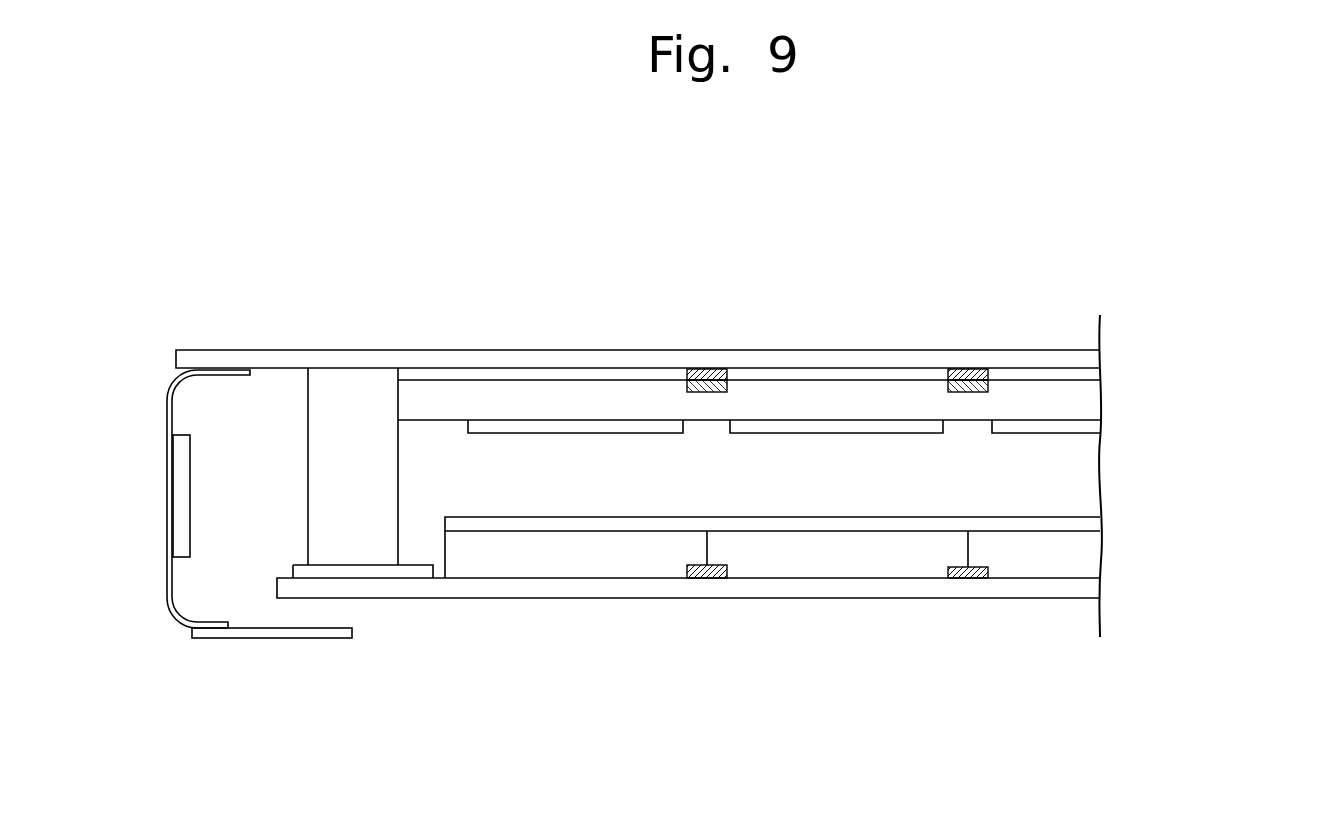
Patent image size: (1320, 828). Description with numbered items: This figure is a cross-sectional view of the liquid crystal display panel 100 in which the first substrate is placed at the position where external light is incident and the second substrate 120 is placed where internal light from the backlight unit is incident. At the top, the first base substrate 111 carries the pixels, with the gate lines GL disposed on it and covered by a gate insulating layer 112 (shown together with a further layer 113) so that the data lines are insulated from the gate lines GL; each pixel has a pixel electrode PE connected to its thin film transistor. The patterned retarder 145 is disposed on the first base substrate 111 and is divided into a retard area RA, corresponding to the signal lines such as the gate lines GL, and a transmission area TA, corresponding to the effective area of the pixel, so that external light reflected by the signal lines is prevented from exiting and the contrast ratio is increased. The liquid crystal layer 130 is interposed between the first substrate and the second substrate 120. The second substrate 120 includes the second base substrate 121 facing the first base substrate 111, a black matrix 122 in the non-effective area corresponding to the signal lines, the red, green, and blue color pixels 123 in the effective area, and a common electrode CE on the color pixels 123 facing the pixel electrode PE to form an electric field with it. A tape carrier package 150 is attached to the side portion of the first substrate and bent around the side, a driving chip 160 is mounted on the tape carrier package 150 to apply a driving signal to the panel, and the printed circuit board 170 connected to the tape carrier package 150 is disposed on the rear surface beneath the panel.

The liquid crystal display panel 100 is at (997, 295).
The first base substrate 111 is at (1088, 360).
The gate insulating layer 112 is at (815, 400).
The adhesive layer 113 is at (1088, 403).
The patterned retarder 145 is at (830, 282).
The retard area RA is at (708, 368).
The transmission area TA is at (798, 372).
The gate line GL is at (697, 393).
The pixel electrode PE is at (1088, 427).
The liquid crystal layer 130 is at (1067, 472).
The common electrode CE is at (1090, 523).
The color pixels 123 is at (1085, 550).
The second base substrate 121 is at (1092, 588).
The black matrix 122 is at (968, 578).
The second substrate 120 is at (1188, 517).
The tape carrier package 150 is at (222, 377).
The driving chip 160 is at (180, 493).
The printed circuit board 170 is at (285, 638).